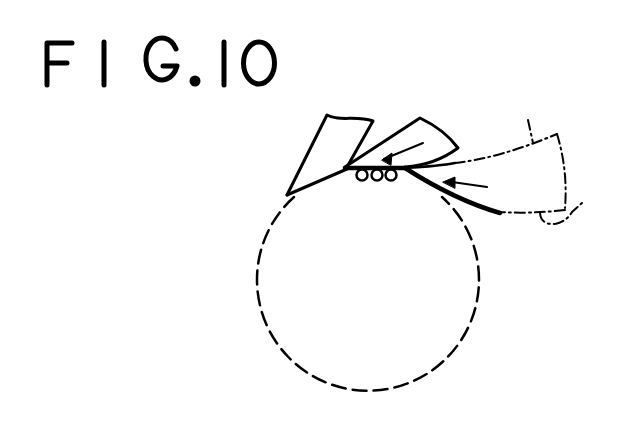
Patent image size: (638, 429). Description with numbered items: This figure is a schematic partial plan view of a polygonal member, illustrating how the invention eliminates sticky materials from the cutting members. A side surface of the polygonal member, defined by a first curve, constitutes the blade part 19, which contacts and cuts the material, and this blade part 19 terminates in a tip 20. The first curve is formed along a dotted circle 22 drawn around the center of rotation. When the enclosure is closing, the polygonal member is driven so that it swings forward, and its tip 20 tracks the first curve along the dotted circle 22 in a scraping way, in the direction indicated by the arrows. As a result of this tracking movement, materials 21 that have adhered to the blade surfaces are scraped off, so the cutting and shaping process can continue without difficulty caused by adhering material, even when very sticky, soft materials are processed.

The blade part 19 is at (498, 215).
The tip 20 is at (423, 172).
The materials 21 is at (358, 180).
The dotted circle 22 is at (266, 336).